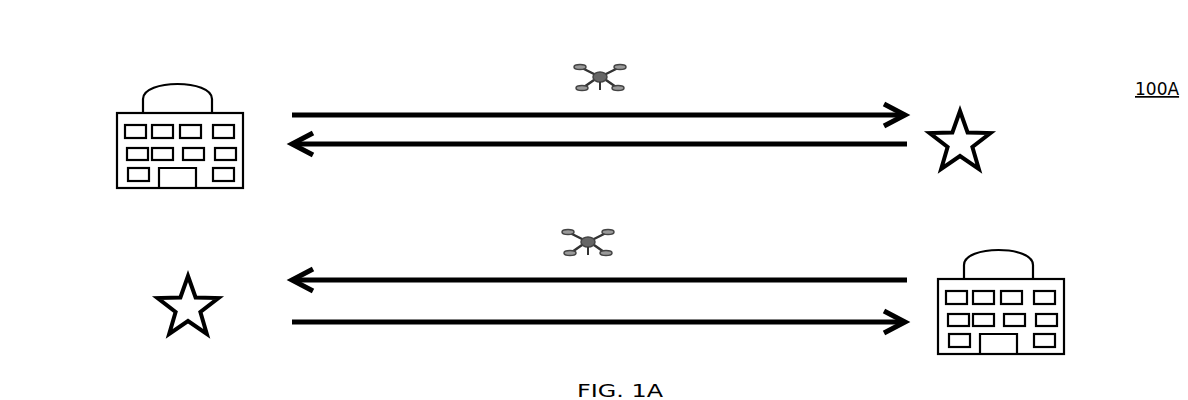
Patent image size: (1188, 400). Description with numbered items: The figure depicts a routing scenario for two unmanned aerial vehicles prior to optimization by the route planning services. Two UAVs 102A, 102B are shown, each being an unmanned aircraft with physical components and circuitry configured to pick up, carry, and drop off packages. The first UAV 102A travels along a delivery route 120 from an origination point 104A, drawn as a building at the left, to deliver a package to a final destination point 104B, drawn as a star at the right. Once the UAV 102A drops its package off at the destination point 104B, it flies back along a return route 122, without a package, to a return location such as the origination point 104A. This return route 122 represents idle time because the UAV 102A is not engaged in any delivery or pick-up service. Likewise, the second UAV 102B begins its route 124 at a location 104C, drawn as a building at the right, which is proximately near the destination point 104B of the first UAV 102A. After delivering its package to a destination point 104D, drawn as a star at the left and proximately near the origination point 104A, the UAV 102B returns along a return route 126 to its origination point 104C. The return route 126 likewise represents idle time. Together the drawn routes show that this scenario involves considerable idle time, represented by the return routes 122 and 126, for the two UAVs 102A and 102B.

The UAV 102A is at (627, 62).
The second UAV 102B is at (606, 228).
The origination point 104A is at (218, 113).
The final destination point 104B is at (960, 113).
The location 104C is at (1007, 250).
The destination point 104D is at (198, 280).
The route 120 is at (777, 113).
The return route 122 is at (781, 146).
The route 124 is at (790, 278).
The return route 126 is at (771, 325).